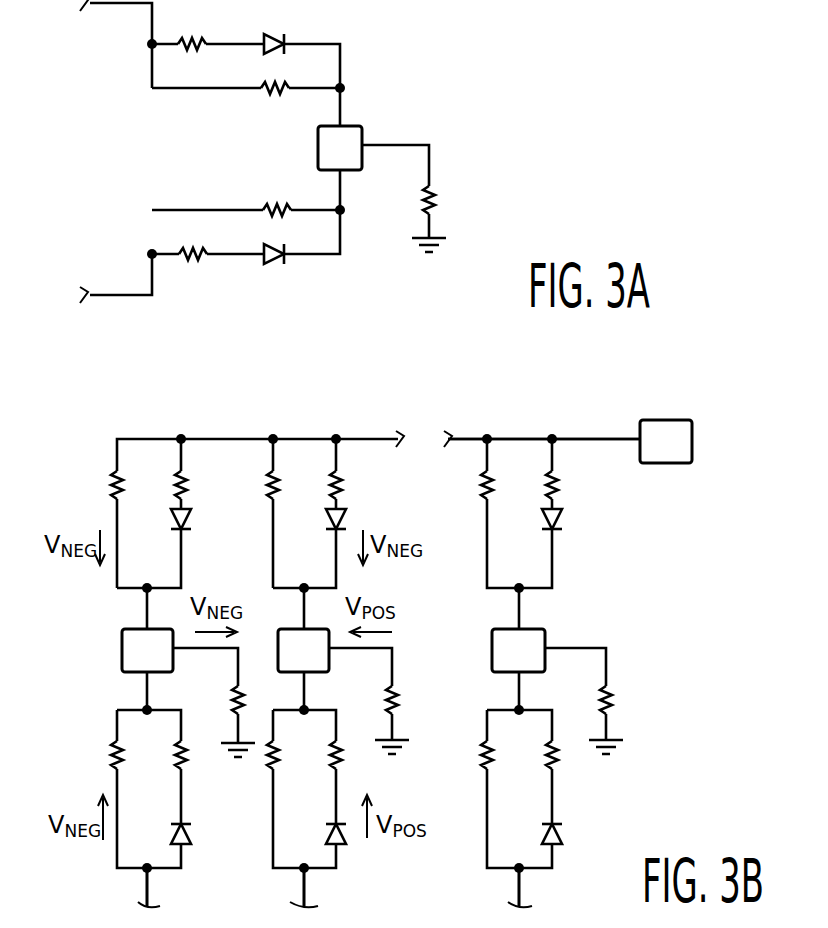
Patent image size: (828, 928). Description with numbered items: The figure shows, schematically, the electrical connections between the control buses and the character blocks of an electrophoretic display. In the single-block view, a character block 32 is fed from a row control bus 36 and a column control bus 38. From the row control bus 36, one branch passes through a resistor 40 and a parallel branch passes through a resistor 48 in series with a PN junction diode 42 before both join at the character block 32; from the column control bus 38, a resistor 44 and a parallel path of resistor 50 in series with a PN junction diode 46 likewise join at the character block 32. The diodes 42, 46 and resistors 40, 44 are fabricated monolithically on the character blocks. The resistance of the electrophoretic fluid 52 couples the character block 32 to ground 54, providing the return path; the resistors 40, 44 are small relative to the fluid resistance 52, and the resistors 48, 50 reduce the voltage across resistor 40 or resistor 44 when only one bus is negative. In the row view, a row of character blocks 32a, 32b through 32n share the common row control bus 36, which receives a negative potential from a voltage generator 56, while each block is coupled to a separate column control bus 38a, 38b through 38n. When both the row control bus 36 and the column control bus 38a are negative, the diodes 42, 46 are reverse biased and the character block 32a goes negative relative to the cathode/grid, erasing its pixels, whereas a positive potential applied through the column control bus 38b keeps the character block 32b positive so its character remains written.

In FIG. 3A, the character block 32 is at (340, 148).
In FIG. 3B, the character block 32a is at (147, 650).
In FIG. 3B, the character block 32b is at (303, 650).
In FIG. 3B, the character block 32n is at (518, 650).
In FIG. 3A, the row control bus 36 is at (98, 6).
In FIG. 3B, the row control bus 36 is at (515, 438).
In FIG. 3A, the column control bus 38 is at (108, 287).
In FIG. 3B, the column control bus 38a is at (135, 891).
In FIG. 3B, the column control bus 38b is at (292, 891).
In FIG. 3B, the column control bus 38n is at (507, 891).
In FIG. 3A, the resistor 40 is at (276, 94).
In FIG. 3B, the resistor 40 is at (112, 471).
In FIG. 3A, the PN junction diode 42 is at (270, 36).
In FIG. 3B, the PN junction diode 42 is at (191, 519).
In FIG. 3A, the resistor 44 is at (276, 204).
In FIG. 3B, the resistor 44 is at (112, 766).
In FIG. 3A, the PN junction diode 46 is at (276, 262).
In FIG. 3B, the PN junction diode 46 is at (192, 829).
In FIG. 3A, the resistor 48 is at (185, 40).
In FIG. 3B, the resistor 48 is at (176, 471).
In FIG. 3A, the resistor 50 is at (193, 262).
In FIG. 3B, the resistor 50 is at (176, 766).
In FIG. 3A, the electrophoretic fluid resistance 52 is at (423, 208).
In FIG. 3B, the electrophoretic fluid resistance 52 is at (229, 702).
In FIG. 3A, the ground 54 is at (447, 238).
In FIG. 3B, the ground 54 is at (647, 753).
In FIG. 3B, the voltage generator 56 is at (666, 441).